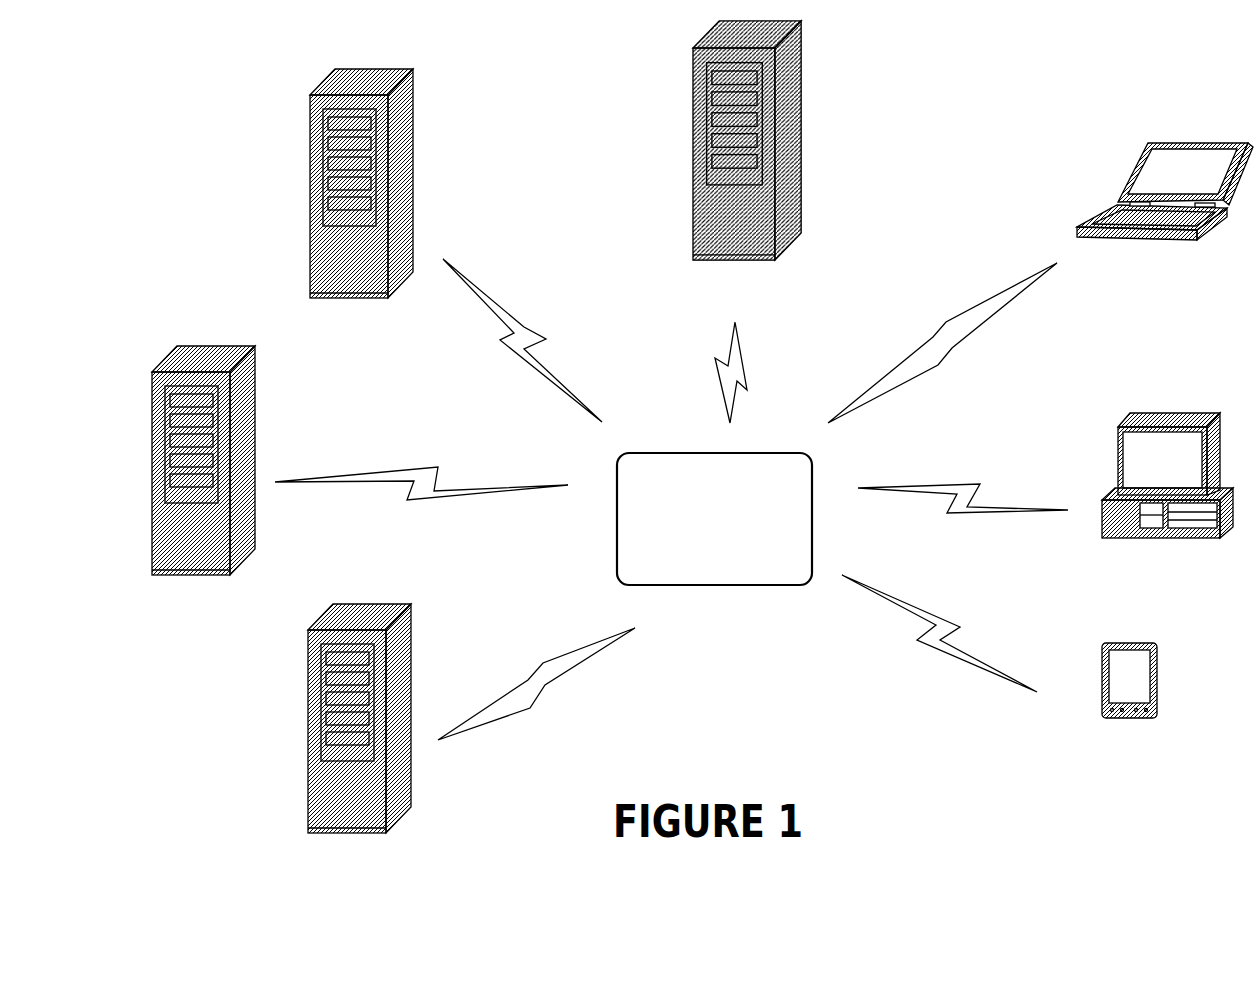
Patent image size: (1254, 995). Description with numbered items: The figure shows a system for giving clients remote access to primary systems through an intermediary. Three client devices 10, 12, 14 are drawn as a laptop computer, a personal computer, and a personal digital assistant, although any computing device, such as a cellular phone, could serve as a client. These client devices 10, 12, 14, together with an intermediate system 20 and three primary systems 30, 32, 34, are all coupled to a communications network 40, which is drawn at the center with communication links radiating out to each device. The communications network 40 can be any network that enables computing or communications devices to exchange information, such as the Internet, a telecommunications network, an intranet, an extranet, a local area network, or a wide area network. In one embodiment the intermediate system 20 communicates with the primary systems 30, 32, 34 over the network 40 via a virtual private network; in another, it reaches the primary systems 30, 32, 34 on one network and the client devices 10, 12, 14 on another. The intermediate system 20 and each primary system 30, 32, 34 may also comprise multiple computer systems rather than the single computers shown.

The client device 10 is at (1165, 214).
The client device 12 is at (1167, 502).
The client device 14 is at (1128, 706).
The intermediate system 20 is at (732, 167).
The primary system 30 is at (347, 211).
The primary system 32 is at (187, 486).
The primary system 34 is at (347, 733).
The communications network 40 is at (714, 519).